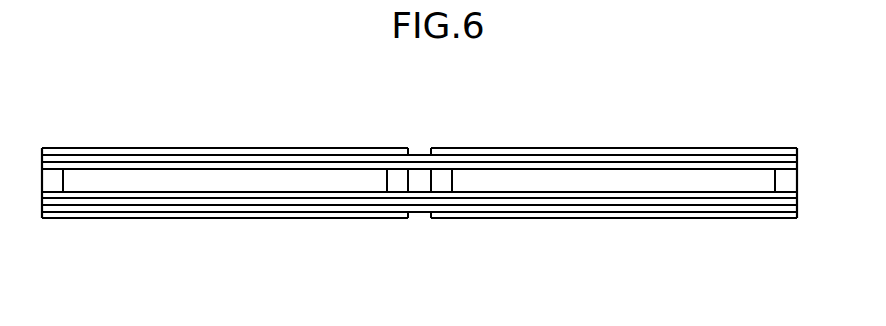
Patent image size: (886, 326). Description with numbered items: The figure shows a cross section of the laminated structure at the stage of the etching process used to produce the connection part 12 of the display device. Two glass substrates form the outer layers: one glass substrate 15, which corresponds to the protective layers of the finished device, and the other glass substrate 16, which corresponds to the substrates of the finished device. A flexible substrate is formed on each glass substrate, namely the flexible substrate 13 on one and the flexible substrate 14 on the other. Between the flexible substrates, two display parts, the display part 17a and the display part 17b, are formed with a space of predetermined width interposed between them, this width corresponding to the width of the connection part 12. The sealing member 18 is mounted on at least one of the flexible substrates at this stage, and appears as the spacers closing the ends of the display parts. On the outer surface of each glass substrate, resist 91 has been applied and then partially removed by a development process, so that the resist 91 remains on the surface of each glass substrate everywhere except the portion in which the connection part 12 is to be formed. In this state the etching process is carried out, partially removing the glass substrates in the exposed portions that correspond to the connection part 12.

The connection part 12 is at (420, 220).
The flexible substrate 13 is at (801, 166).
The flexible substrate 14 is at (801, 198).
The glass substrate 15 is at (698, 157).
The glass substrate 16 is at (700, 211).
The display part 17a is at (218, 182).
The display part 17b is at (618, 182).
The sealing member 18 is at (40, 176).
The resist 91 is at (126, 147).